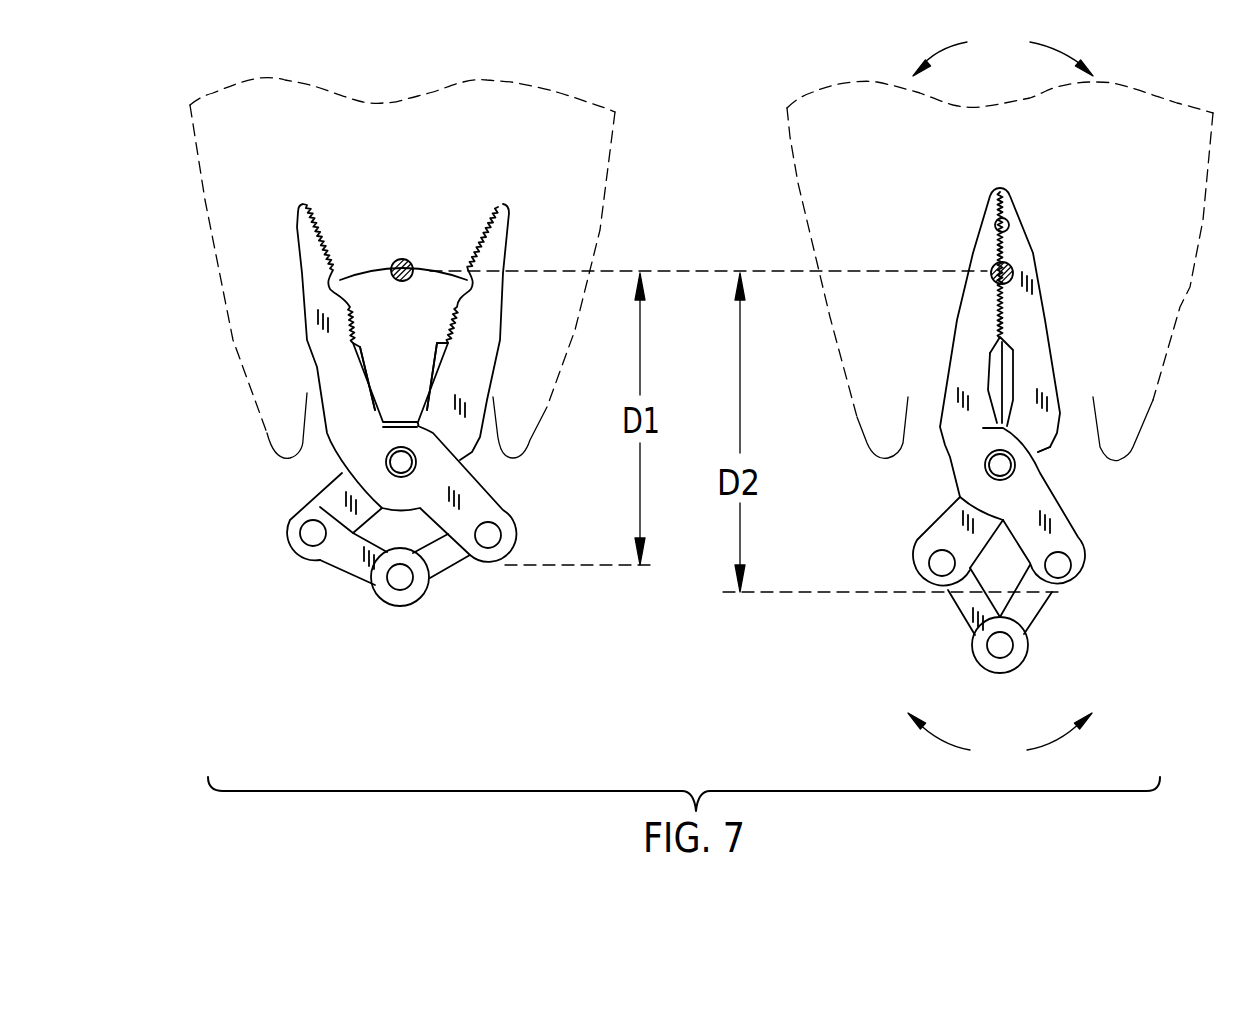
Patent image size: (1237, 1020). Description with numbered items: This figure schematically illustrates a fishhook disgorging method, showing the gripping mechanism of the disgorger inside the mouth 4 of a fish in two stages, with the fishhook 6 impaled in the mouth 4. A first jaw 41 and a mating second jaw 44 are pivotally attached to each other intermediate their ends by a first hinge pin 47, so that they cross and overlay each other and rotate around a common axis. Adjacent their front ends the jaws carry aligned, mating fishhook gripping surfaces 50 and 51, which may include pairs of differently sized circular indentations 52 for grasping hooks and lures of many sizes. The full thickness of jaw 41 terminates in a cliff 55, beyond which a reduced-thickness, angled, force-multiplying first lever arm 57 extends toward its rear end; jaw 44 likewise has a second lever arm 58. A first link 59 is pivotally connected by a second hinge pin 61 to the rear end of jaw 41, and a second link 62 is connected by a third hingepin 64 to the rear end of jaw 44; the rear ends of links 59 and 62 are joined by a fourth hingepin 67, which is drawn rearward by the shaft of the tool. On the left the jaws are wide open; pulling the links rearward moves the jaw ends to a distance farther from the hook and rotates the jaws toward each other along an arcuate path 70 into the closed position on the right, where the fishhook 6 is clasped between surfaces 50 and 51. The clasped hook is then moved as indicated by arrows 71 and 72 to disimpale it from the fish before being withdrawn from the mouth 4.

The mouth 4 is at (583, 157).
The fishhook 6 is at (400, 259).
The first member or jaw 41 is at (492, 324).
The second member or jaw 44 is at (962, 343).
The first hinge pin 47 is at (386, 460).
The fishhook gripping surface 50 is at (447, 325).
The fishhook gripping surface 51 is at (350, 312).
The circular indentations 52 is at (327, 270).
The cliff 55 is at (1050, 443).
The first lever arm 57 is at (342, 473).
The second lever arm 58 is at (485, 493).
The first link 59 is at (342, 573).
The second hinge pin 61 is at (290, 527).
The second link 62 is at (450, 572).
The third hingepin 64 is at (515, 533).
The fourth hingepin 67 is at (398, 606).
The arcuate path 70 is at (365, 270).
The arrow 71 is at (1003, 47).
The arrow 72 is at (1000, 743).